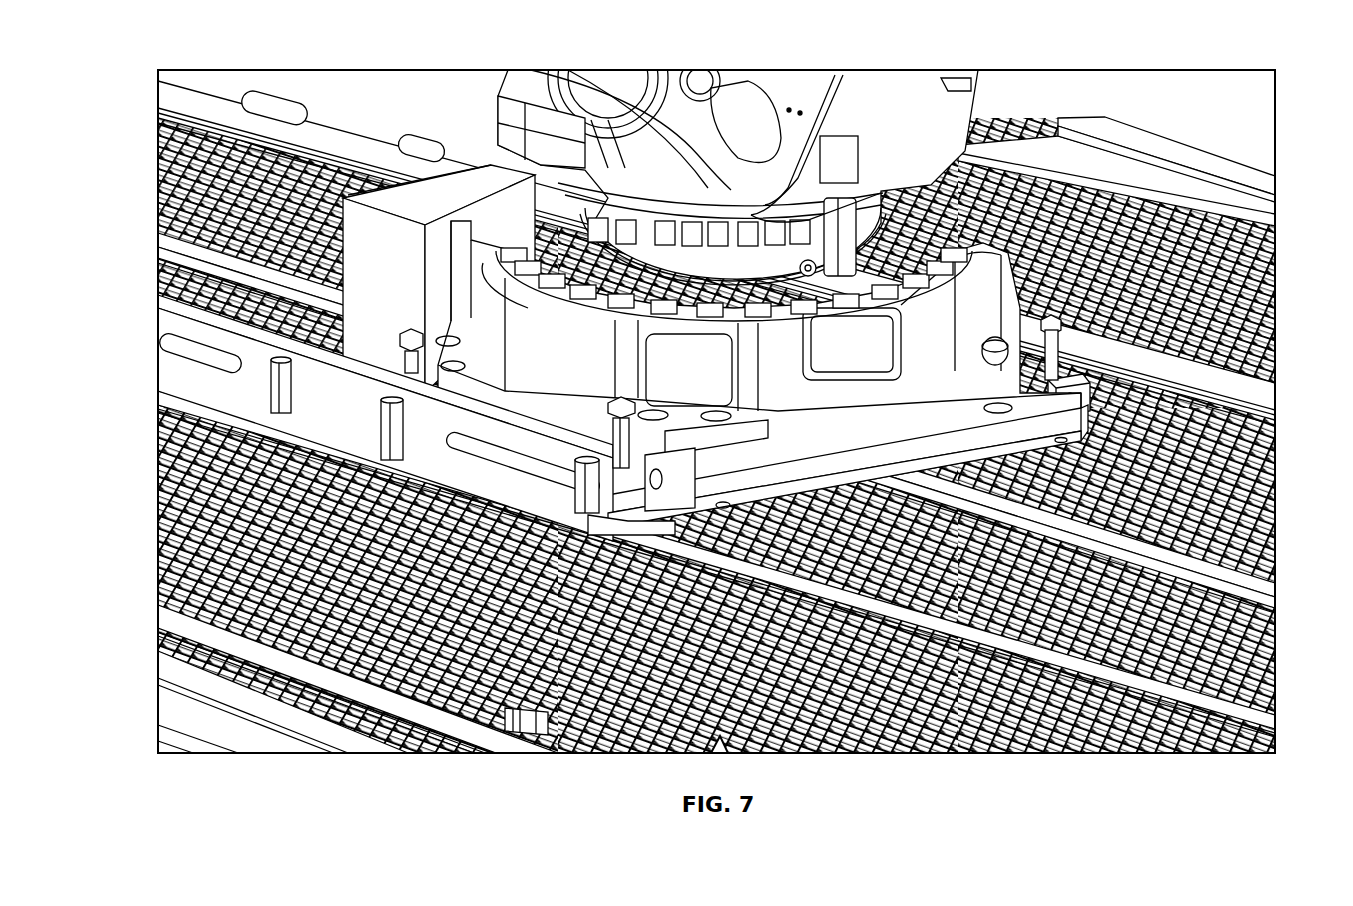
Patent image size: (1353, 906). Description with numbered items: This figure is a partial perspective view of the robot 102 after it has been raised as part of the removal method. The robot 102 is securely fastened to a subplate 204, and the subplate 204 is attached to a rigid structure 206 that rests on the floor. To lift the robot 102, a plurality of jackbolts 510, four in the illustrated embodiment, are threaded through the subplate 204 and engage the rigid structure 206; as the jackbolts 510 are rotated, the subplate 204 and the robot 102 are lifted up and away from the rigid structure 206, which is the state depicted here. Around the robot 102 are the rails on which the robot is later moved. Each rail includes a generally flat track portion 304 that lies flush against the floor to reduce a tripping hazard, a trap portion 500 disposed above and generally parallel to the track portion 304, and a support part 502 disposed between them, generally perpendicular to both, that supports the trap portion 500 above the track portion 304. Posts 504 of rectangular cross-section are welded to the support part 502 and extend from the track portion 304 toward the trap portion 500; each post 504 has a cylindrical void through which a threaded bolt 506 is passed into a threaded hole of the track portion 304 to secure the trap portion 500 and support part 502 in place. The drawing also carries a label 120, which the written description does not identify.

The robot 102 is at (868, 80).
The work surface grid 120 is at (140, 301).
The subplate 204 is at (822, 457).
The rigid structure 206 is at (1023, 450).
The track portion 304 is at (350, 352).
The trap portion 500 is at (683, 417).
The support part 502 is at (186, 335).
The post 504 is at (268, 397).
The threaded bolt 506 is at (265, 350).
The jackbolt 510 is at (410, 322).